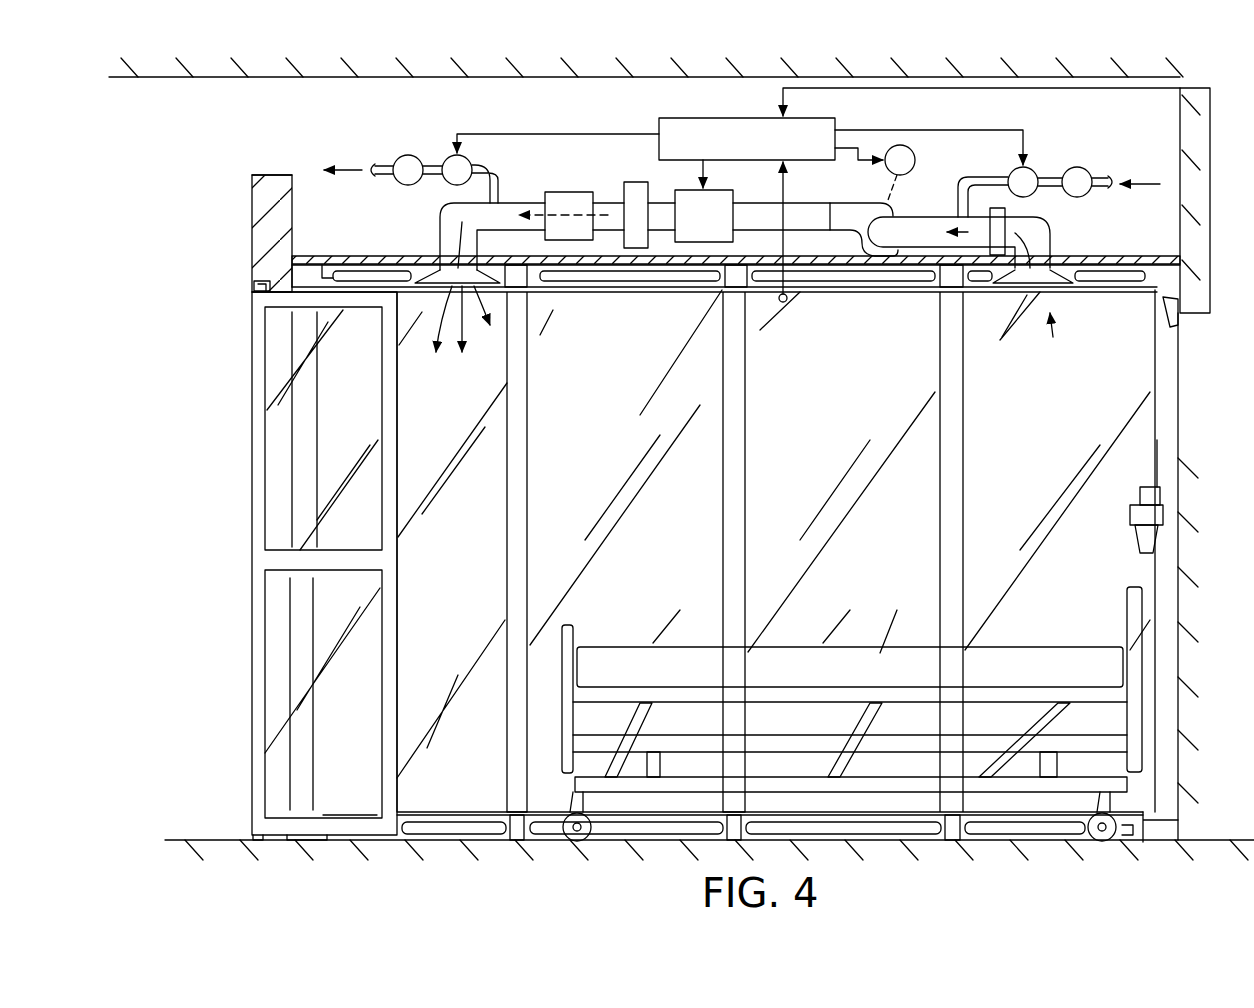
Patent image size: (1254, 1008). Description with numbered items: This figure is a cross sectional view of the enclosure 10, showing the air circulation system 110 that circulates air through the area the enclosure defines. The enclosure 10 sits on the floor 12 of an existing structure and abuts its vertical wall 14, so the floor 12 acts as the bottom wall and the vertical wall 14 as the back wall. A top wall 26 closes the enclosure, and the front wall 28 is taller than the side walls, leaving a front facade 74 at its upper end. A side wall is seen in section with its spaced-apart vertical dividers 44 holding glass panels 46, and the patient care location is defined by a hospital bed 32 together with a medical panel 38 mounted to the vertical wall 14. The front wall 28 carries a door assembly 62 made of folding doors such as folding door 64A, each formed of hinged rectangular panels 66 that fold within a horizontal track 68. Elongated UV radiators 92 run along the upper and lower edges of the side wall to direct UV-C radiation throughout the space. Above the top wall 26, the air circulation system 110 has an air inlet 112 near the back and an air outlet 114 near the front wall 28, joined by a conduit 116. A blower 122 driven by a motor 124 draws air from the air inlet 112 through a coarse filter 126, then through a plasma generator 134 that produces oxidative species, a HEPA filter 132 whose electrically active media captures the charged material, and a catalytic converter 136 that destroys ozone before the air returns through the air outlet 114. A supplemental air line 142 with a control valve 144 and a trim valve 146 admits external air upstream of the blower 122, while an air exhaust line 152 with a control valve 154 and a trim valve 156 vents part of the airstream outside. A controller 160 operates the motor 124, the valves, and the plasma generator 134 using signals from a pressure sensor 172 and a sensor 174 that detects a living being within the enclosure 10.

The enclosure 10 is at (176, 300).
The floor 12 is at (212, 838).
The vertical wall 14 is at (1165, 383).
The top wall 26 is at (598, 270).
The front wall 28 is at (248, 212).
The hospital bed 32 is at (878, 660).
The medical panel 38 is at (1157, 470).
The vertical dividers 44 is at (522, 550).
The glass panels 46 is at (430, 538).
The door assembly 62 is at (248, 574).
The folding door 64A is at (248, 661).
The rectangular panels 66 is at (258, 492).
The horizontal track 68 is at (256, 283).
The front facade 74 is at (252, 190).
The UV radiators 92 is at (355, 273).
The air circulation system 110 is at (512, 106).
The air inlet 112 is at (1052, 270).
The air outlet 114 is at (457, 329).
The conduit 116 is at (442, 235).
The blower 122 is at (850, 256).
The motor 124 is at (905, 148).
The coarse filter 126 is at (998, 257).
The HEPA filter 132 is at (636, 250).
The plasma generator 134 is at (705, 244).
The catalytic converter 136 is at (568, 200).
The supplemental air line 142 is at (1050, 178).
The control valve 144 is at (1020, 166).
The trim valve 146 is at (1086, 165).
The air exhaust line 152 is at (510, 178).
The control valve 154 is at (452, 154).
The trim valve 156 is at (403, 155).
The controller 160 is at (712, 118).
The pressure sensor 172 is at (783, 304).
The sensor 174 is at (1168, 315).